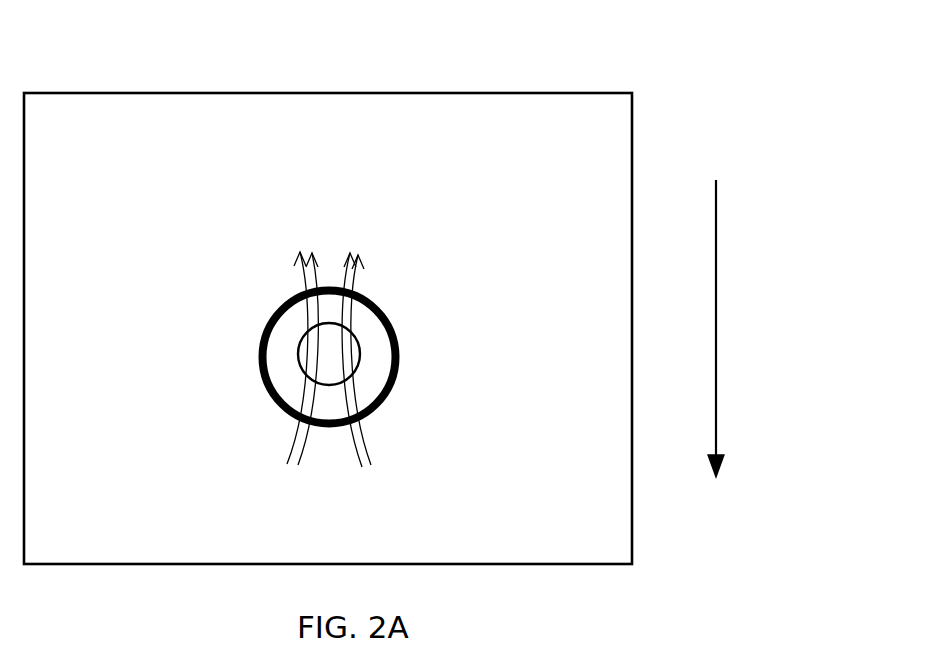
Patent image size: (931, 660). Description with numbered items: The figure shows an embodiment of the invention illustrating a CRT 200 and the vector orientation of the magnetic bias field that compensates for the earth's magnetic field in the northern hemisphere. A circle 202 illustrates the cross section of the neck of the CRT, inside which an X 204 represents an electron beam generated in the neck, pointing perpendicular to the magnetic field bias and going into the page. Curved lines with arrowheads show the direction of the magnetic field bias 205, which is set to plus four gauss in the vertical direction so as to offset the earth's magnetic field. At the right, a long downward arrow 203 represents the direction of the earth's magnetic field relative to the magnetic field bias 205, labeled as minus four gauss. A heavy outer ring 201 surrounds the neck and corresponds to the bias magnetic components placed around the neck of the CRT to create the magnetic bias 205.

The CRT 200 is at (487, 70).
The outer ring of magnet 201 is at (268, 314).
The neck of the CRT 202 is at (341, 352).
The earth's magnetic field 203 is at (727, 252).
The electron beam 204 is at (328, 368).
The magnetic field bias 205 is at (302, 243).